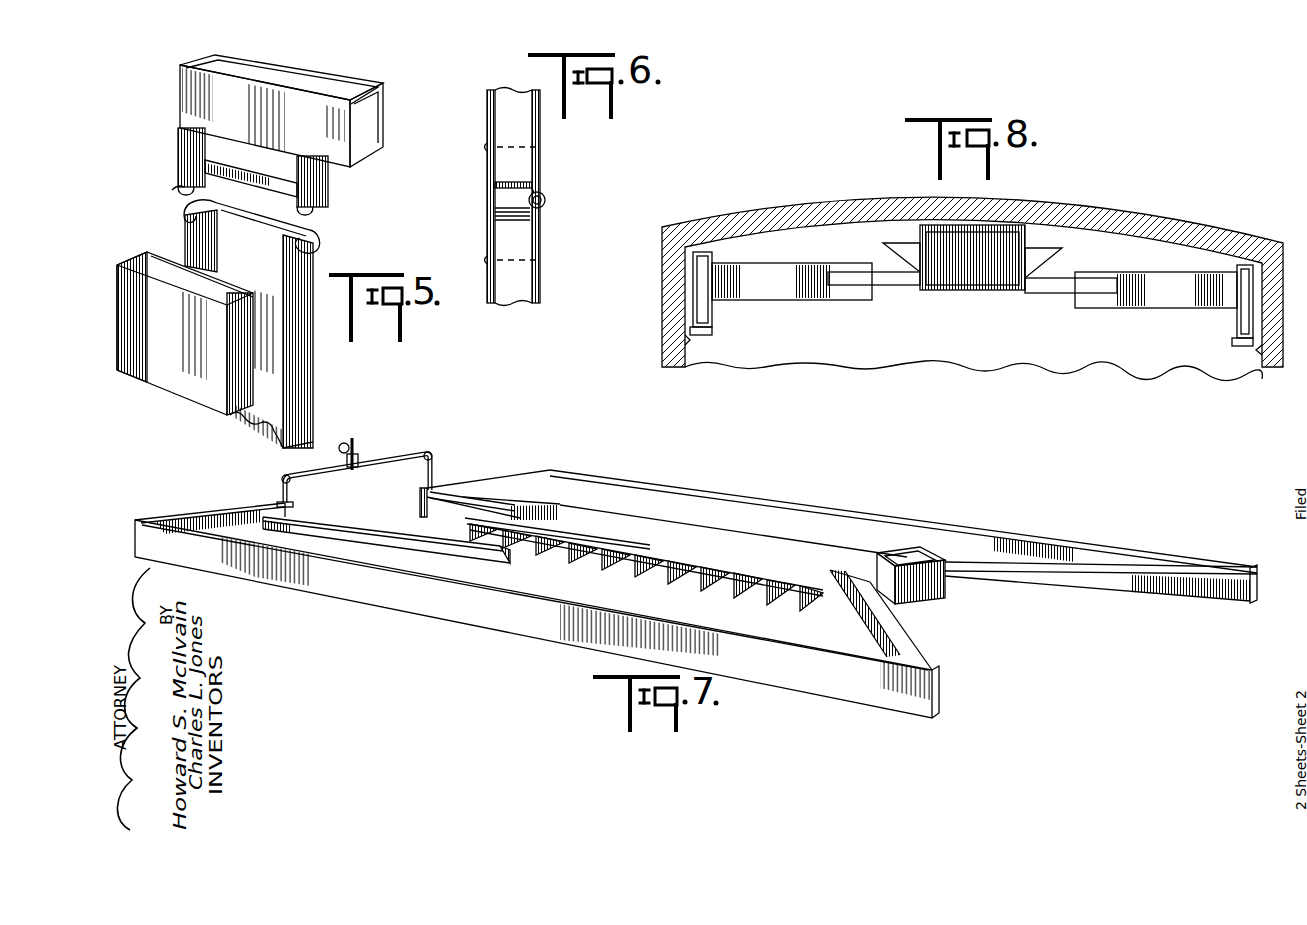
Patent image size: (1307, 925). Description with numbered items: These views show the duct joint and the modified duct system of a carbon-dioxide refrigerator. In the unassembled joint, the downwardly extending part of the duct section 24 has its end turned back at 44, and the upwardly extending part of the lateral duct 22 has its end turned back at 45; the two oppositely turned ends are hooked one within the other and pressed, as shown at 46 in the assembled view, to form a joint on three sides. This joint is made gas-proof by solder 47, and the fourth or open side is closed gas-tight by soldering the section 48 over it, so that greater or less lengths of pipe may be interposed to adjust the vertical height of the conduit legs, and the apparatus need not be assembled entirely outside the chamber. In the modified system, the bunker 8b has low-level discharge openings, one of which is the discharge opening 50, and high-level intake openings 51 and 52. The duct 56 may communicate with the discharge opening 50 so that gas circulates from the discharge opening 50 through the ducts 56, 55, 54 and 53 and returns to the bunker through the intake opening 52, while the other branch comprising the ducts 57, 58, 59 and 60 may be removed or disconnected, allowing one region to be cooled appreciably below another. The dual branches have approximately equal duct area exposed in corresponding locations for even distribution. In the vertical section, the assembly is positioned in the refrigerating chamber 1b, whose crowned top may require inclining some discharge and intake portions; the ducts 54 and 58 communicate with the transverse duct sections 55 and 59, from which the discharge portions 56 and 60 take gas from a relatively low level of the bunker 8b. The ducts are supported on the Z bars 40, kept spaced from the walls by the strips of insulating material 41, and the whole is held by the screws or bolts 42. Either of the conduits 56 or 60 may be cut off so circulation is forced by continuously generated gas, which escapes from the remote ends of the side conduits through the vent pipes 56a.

In FIG. 8, the refrigerating chamber 1b is at (1146, 216).
In FIG. 8, the bunker 8b is at (957, 292).
In FIG. 7, the bunker 8b is at (686, 580).
In FIG. 5, the lateral duct 22 is at (307, 392).
In FIG. 5, the duct section 24 is at (381, 88).
In FIG. 8, the Z bars 40 is at (716, 322).
In FIG. 8, the strips of insulating material 41 is at (664, 299).
In FIG. 8, the screws or bolts 42 is at (690, 342).
In FIG. 5, the turned-back end 44 is at (176, 190).
In FIG. 5, the turned-back end 45 is at (322, 240).
In FIG. 6, the pressed joint 46 is at (546, 204).
In FIG. 6, the solder 47 is at (538, 184).
In FIG. 5, the closing section 48 is at (151, 380).
In FIG. 6, the closing section 48 is at (492, 213).
In FIG. 7, the discharge opening 50 is at (512, 554).
In FIG. 7, the intake opening 51 is at (910, 562).
In FIG. 7, the intake opening 52 is at (855, 584).
In FIG. 7, the duct 53 is at (905, 637).
In FIG. 8, the duct 54 is at (714, 305).
In FIG. 7, the duct 54 is at (478, 614).
In FIG. 8, the transverse duct section 55 is at (779, 275).
In FIG. 7, the transverse duct section 55 is at (232, 515).
In FIG. 8, the discharge duct 56 is at (884, 287).
In FIG. 7, the discharge duct 56 is at (338, 524).
In FIG. 7, the vent pipes 56a is at (415, 462).
In FIG. 7, the duct 57 is at (1097, 580).
In FIG. 8, the duct 58 is at (1237, 319).
In FIG. 7, the duct 58 is at (995, 540).
In FIG. 8, the transverse duct section 59 is at (1168, 277).
In FIG. 7, the transverse duct section 59 is at (507, 490).
In FIG. 8, the discharge duct 60 is at (1048, 292).
In FIG. 7, the discharge duct 60 is at (462, 494).